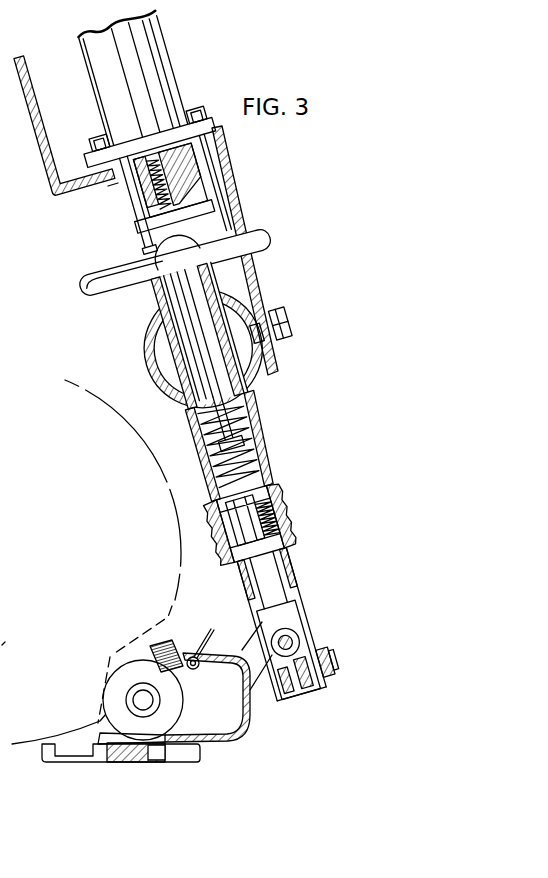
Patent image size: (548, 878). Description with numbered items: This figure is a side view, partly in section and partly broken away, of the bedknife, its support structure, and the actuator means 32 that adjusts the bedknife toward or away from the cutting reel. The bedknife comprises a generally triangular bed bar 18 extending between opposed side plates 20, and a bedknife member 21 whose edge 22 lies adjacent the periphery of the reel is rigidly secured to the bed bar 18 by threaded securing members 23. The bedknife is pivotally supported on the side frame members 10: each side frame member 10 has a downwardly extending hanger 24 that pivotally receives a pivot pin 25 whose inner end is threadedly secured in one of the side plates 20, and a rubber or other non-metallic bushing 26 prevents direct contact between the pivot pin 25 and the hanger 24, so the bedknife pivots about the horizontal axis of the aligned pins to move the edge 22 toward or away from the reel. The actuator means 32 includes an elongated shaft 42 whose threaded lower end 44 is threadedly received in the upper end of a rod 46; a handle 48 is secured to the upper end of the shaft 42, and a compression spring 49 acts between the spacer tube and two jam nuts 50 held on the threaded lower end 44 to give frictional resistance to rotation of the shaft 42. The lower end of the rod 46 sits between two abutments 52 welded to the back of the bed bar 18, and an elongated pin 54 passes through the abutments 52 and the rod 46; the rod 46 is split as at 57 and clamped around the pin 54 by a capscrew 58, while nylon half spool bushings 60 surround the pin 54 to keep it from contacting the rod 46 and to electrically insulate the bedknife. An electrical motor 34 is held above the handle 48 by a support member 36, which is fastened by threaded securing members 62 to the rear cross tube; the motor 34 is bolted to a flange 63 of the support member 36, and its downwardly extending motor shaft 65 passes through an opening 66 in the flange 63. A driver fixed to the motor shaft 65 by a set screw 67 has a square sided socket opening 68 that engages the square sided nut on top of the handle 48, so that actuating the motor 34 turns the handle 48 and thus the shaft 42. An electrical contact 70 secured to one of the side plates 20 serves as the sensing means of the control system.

The side frame member 10 is at (7, 657).
The bed bar 18 is at (214, 733).
The side plate 20 is at (170, 612).
The bedknife member 21 is at (97, 760).
The edge 22 is at (42, 750).
The threaded securing member 23 is at (125, 757).
The hanger 24 is at (153, 730).
The pivot pin 25 is at (137, 697).
The bushing 26 is at (163, 708).
The actuator means 32 is at (271, 393).
The electrical motor 34 is at (162, 34).
The support member 36 is at (233, 196).
The shaft 42 is at (259, 259).
The threaded lower end 44 is at (277, 517).
The rod 46 is at (283, 602).
The handle 48 is at (245, 232).
The compression spring 49 is at (247, 437).
The jam nut 50 is at (260, 483).
The abutment 52 is at (258, 697).
The pin 54 is at (292, 640).
The split 57 is at (298, 690).
The capscrew 58 is at (320, 670).
The bushing 60 is at (294, 633).
The threaded securing member 62 is at (283, 301).
The flange 63 is at (64, 182).
The motor shaft 65 is at (142, 212).
The opening 66 is at (113, 184).
The set screw 67 is at (168, 215).
The socket opening 68 is at (153, 238).
The electrical contact 70 is at (200, 660).